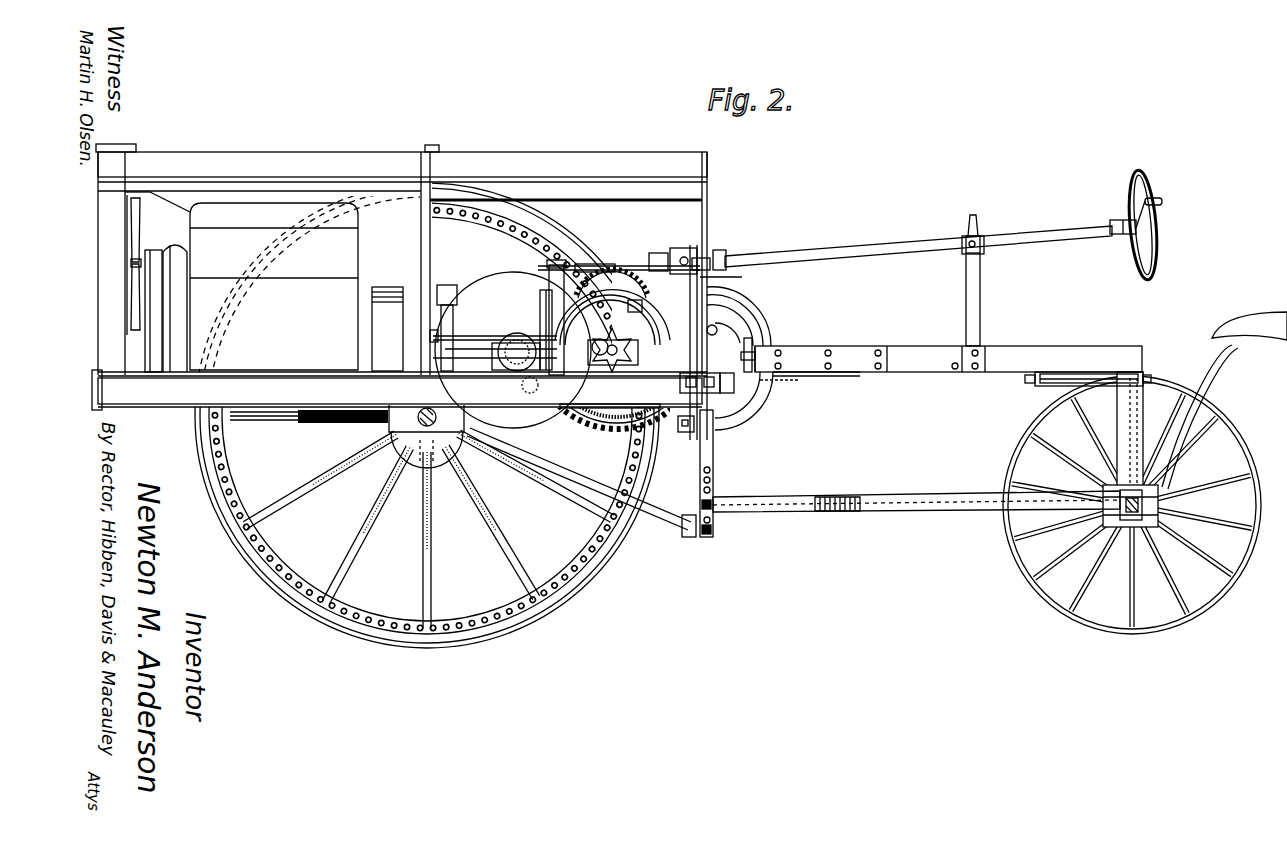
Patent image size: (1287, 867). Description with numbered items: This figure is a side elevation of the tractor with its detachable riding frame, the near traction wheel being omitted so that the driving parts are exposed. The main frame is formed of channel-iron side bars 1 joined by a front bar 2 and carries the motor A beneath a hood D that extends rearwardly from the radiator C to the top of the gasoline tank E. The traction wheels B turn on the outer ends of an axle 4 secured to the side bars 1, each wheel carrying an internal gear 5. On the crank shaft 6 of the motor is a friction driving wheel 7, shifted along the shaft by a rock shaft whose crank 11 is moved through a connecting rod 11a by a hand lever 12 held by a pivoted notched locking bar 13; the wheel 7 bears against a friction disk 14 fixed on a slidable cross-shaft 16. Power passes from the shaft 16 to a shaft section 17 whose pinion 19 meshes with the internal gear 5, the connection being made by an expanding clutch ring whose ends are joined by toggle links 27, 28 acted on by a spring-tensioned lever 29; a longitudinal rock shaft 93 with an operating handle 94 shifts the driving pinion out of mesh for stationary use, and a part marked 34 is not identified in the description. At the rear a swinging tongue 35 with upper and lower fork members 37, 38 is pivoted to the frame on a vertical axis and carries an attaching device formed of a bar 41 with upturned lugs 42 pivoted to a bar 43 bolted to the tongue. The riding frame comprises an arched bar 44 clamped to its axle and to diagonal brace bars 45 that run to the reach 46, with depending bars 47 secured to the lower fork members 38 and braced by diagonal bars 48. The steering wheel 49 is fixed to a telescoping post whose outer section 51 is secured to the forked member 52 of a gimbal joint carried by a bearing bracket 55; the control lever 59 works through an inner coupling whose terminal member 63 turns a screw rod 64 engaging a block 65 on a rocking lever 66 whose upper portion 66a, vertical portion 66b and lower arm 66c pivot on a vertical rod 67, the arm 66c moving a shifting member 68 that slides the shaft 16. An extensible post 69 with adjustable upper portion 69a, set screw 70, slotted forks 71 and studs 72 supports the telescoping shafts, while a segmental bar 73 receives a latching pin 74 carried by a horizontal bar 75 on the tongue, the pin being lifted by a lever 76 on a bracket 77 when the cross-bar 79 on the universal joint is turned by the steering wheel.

The side bars 1 is at (272, 400).
The front bar 2 is at (100, 378).
The axle 4 is at (415, 430).
The internal gears 5 is at (470, 625).
The crank shaft 6 is at (403, 350).
The friction driving wheel 7 is at (447, 286).
The crank 11 is at (436, 350).
The connecting rod 11a is at (456, 323).
The hand lever 12 is at (719, 338).
The notched locking bar 13 is at (686, 385).
The friction disk 14 is at (480, 292).
The cross-shaft 16 is at (501, 328).
The shaft section 17 is at (611, 368).
The pinion 19 is at (612, 372).
The toggle link 27 is at (605, 282).
The toggle link 28 is at (636, 298).
The lever 29 is at (601, 336).
The curved guard 34 is at (612, 317).
The swinging tongue 35 is at (1000, 346).
The upper fork member 37 is at (763, 323).
The lower fork member 38 is at (760, 400).
The bar 41 is at (1042, 386).
The upturned lugs 42 is at (1014, 394).
The bar 43 is at (1065, 370).
The arched bar 44 is at (1117, 437).
The diagonal brace bars 45 is at (960, 512).
The reach 46 is at (965, 492).
The depending bars 47 is at (714, 472).
The diagonal brace bars 48 is at (672, 508).
The steering wheel 49 is at (1145, 184).
The tubular outer section 51 is at (893, 245).
The forked member 52 is at (722, 252).
The bearing bracket 55 is at (682, 248).
The control lever 59 is at (1163, 203).
The terminal member 63 is at (702, 256).
The screw rod 64 is at (656, 253).
The block 65 is at (560, 264).
The rocking lever 66 is at (536, 266).
The horizontal upper portion 66a is at (603, 268).
The vertical intermediate portion 66b is at (552, 328).
The lower horizontal arm 66c is at (517, 371).
The vertical rod 67 is at (585, 424).
The shifting member 68 is at (494, 364).
The extensible post 69 is at (966, 302).
The upper portion 69a is at (966, 255).
The set screw 70 is at (984, 244).
The slotted forks 71 is at (972, 216).
The studs 72 is at (952, 232).
The segmental bar 73 is at (748, 385).
The latching pin 74 is at (738, 355).
The horizontal bar 75 is at (795, 376).
The horizontal lever 76 is at (745, 330).
The bracket 77 is at (738, 306).
The cross-bar 79 is at (734, 277).
The rock shaft 93 is at (618, 432).
The operating handle 94 is at (758, 348).
The motor A is at (290, 218).
The traction wheels B is at (602, 560).
The radiator C is at (128, 192).
The hood D is at (255, 168).
The gasoline tank E is at (603, 182).